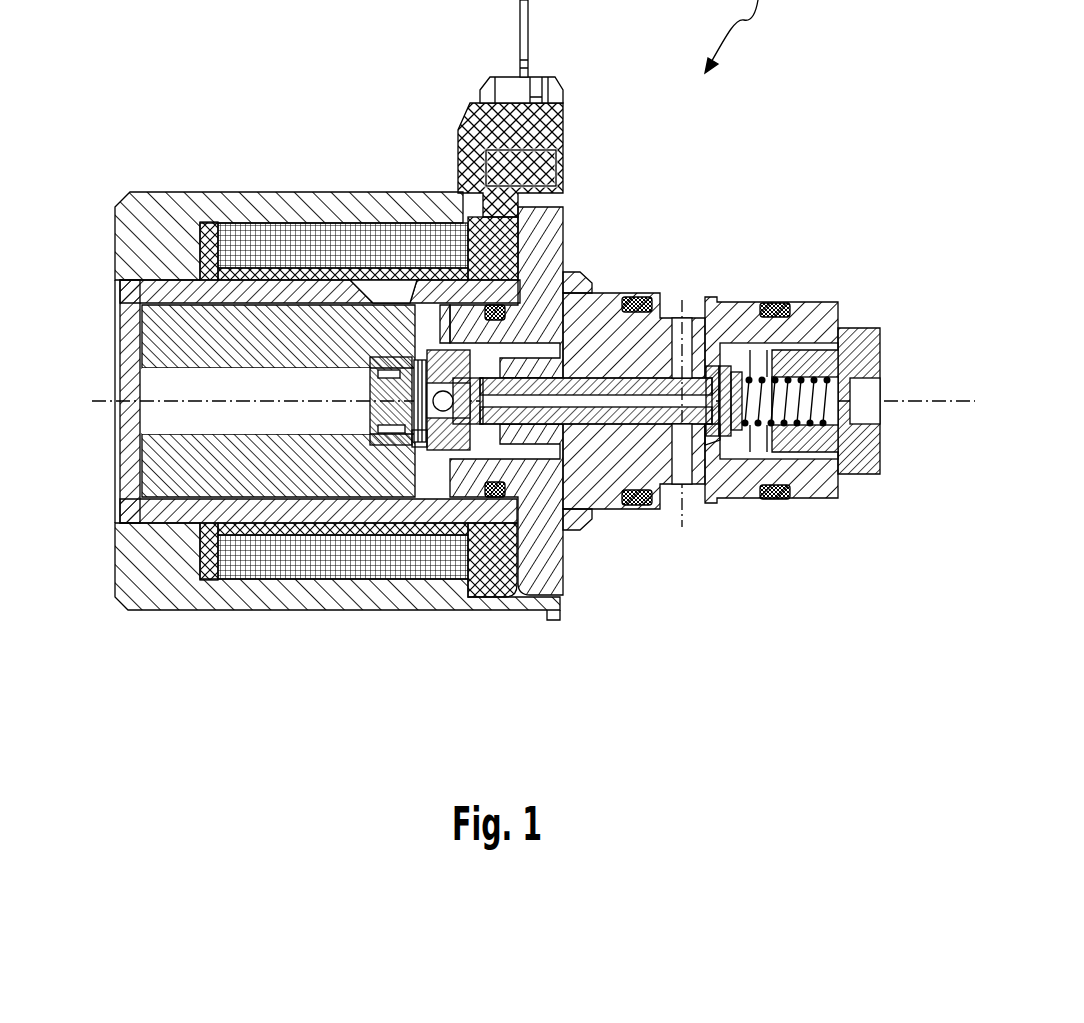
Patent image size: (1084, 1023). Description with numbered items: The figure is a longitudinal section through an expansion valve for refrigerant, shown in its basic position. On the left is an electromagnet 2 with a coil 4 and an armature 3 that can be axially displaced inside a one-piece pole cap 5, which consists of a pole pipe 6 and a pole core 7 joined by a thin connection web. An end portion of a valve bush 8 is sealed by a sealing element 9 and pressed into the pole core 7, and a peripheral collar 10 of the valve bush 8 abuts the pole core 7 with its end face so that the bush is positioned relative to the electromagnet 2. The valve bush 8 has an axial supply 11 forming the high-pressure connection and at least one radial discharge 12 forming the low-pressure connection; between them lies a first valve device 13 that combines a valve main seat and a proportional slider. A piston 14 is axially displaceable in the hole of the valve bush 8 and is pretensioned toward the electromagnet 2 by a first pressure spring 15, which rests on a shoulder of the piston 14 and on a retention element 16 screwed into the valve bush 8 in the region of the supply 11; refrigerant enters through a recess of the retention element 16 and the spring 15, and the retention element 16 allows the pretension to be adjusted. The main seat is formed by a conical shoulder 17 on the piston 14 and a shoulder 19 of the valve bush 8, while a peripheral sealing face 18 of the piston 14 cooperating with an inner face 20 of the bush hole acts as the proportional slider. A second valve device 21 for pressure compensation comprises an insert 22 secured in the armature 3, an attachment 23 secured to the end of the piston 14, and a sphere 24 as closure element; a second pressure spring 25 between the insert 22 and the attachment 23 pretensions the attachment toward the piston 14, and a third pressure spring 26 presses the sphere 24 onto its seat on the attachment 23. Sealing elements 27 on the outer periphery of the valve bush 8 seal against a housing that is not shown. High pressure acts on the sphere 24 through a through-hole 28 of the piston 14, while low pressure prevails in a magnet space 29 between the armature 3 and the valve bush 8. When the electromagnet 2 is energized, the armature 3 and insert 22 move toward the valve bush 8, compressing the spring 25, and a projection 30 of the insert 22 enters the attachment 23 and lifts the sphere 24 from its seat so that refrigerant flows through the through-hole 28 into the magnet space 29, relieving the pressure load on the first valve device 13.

The electromagnet 2 is at (173, 555).
The armature 3 is at (173, 462).
The coil 4 is at (290, 252).
The pole cap 5 is at (136, 295).
The pole pipe 6 is at (187, 293).
The pole core 7 is at (567, 270).
The valve bush 8 is at (817, 318).
The sealing element 9 is at (445, 303).
The peripheral collar 10 is at (573, 522).
The supply 11 is at (888, 412).
The radial discharge 12 is at (688, 322).
The first valve device 13 is at (736, 432).
The piston 14 is at (590, 470).
The first pressure spring 15 is at (792, 432).
The retention element 16 is at (878, 372).
The conical shoulder 17 is at (726, 368).
The peripheral sealing face 18 is at (714, 368).
The shoulder 19 is at (714, 445).
The inner face 20 is at (688, 486).
The second valve device 21 is at (580, 272).
The insert 22 is at (365, 405).
The attachment 23 is at (462, 452).
The sphere 24 is at (413, 447).
The second pressure spring 25 is at (393, 447).
The third pressure spring 26 is at (495, 498).
The sealing elements 27 is at (780, 500).
The through-hole 28 is at (612, 378).
The magnet space 29 is at (437, 450).
The projection 30 is at (422, 300).